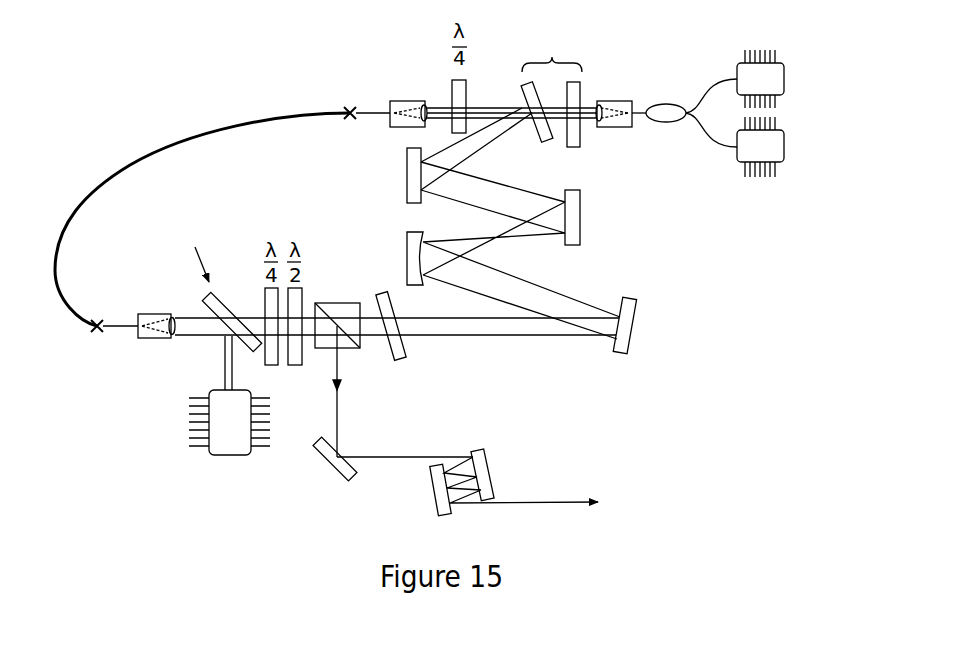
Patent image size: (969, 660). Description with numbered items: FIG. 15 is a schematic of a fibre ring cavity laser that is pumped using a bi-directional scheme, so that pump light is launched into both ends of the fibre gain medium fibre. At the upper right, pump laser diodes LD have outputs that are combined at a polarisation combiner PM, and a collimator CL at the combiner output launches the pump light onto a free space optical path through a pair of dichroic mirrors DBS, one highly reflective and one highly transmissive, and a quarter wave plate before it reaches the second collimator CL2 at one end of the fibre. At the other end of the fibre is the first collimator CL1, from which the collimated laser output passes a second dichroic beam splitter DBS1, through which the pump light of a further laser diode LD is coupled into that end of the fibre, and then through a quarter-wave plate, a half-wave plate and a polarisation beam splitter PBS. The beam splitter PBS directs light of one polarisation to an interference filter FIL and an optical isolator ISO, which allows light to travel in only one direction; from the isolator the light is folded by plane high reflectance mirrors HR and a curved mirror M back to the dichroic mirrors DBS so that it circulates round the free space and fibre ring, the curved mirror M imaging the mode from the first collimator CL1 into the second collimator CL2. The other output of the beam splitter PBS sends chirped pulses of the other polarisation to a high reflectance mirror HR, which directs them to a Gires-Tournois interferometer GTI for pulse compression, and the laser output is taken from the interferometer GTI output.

The fibre based laser gain medium fibre is at (222, 207).
The second collimator CL2 is at (408, 101).
The dichroic mirrors DBS is at (553, 73).
The collimator CL is at (614, 127).
The polarisation combiner PM is at (684, 112).
The laser diode LD is at (486, 252).
The high reflectance mirror HR is at (478, 320).
The curved mirror M is at (403, 258).
The first collimator CL1 is at (156, 313).
The dichroic beam splitter DBS1 is at (197, 272).
The polarisation beam splitter PBS is at (338, 367).
The interference filter FIL is at (393, 340).
The optical isolator ISO is at (468, 362).
The Gires-Tournois interferometer GTI is at (467, 485).